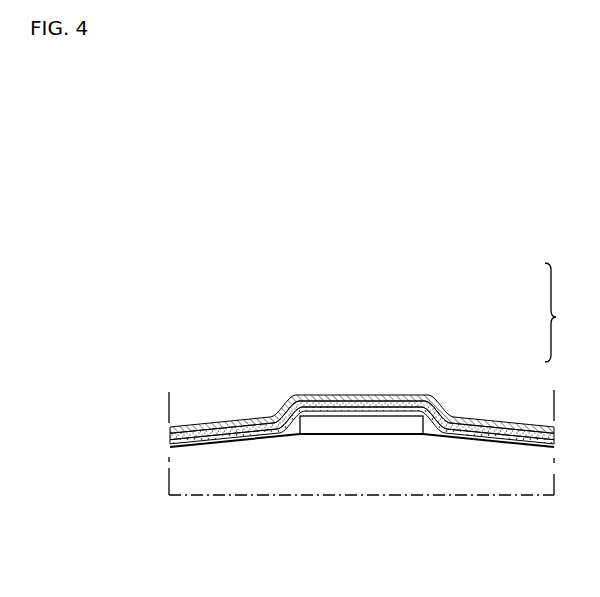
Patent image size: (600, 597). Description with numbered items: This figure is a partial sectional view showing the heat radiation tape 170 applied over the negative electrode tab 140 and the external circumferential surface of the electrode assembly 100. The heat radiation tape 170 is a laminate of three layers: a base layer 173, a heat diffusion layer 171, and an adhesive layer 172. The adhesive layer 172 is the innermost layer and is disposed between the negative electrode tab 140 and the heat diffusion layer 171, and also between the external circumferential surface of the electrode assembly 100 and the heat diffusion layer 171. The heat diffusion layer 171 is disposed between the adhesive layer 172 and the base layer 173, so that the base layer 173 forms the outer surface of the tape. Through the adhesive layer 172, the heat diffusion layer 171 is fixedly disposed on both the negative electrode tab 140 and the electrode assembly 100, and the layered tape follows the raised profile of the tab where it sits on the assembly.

The electrode assembly 100 is at (408, 470).
The negative electrode tab 140 is at (321, 424).
The heat radiation tape 170 is at (569, 312).
The heat diffusion layer 171 is at (347, 403).
The adhesive layer 172 is at (376, 409).
The base layer 173 is at (318, 397).